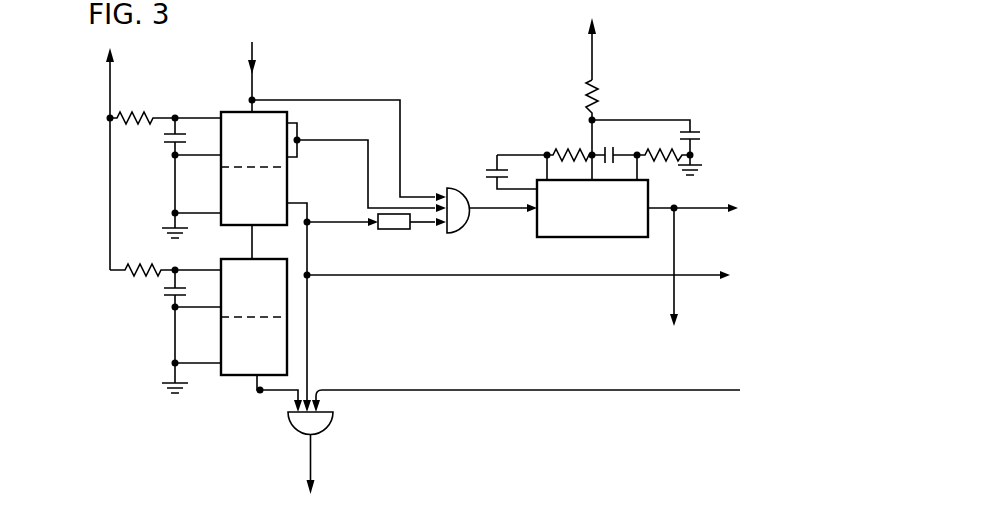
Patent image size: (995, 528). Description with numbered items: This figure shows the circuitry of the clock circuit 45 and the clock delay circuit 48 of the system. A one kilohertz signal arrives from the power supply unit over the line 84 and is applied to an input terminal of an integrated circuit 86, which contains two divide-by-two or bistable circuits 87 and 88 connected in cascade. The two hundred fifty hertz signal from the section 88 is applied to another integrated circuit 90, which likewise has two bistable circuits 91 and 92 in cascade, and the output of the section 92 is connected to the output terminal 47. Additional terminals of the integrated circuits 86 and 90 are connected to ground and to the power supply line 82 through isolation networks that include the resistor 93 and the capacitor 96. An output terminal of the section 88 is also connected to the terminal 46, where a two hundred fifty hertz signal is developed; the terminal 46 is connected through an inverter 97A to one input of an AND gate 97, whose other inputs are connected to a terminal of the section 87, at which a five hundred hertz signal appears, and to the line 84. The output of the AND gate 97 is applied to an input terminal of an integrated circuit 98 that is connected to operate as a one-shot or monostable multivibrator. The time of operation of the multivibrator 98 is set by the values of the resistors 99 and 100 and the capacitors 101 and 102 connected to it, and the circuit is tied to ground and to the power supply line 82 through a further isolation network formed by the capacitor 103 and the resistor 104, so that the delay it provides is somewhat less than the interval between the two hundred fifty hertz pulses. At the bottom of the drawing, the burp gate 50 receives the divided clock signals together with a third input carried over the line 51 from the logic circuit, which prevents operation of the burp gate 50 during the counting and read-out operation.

The power supply line 82 is at (108, 78).
The line 84 is at (254, 50).
The integrated circuit 86 is at (264, 160).
The bistable circuit 87 is at (277, 158).
The bistable circuit 88 is at (277, 187).
The integrated circuit 90 is at (265, 310).
The bistable circuit 91 is at (277, 290).
The bistable circuit 92 is at (277, 337).
The resistor 93 is at (128, 118).
The capacitor 96 is at (136, 276).
The terminal 46 is at (307, 222).
The output terminal 47 is at (258, 393).
The clock circuit 45 is at (374, 311).
The clock delay circuit 48 is at (492, 303).
The burp gate 50 is at (333, 422).
The line 51 is at (490, 367).
The AND gate 97 is at (465, 212).
The inverter 97A is at (385, 229).
The integrated circuit 98 is at (580, 237).
The resistor 99 is at (564, 150).
The resistor 100 is at (660, 150).
The capacitor 101 is at (626, 134).
The capacitor 102 is at (493, 168).
The capacitor 103 is at (700, 131).
The resistor 104 is at (585, 97).